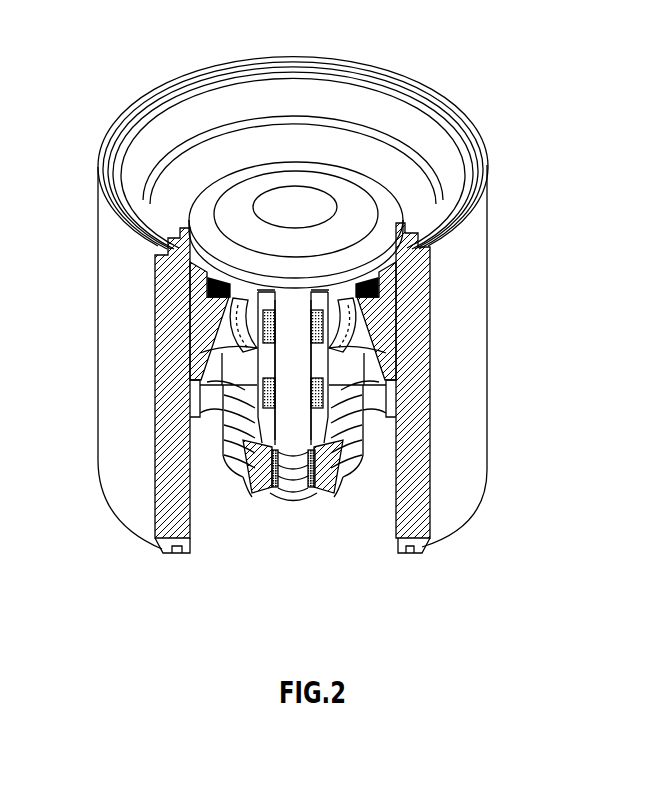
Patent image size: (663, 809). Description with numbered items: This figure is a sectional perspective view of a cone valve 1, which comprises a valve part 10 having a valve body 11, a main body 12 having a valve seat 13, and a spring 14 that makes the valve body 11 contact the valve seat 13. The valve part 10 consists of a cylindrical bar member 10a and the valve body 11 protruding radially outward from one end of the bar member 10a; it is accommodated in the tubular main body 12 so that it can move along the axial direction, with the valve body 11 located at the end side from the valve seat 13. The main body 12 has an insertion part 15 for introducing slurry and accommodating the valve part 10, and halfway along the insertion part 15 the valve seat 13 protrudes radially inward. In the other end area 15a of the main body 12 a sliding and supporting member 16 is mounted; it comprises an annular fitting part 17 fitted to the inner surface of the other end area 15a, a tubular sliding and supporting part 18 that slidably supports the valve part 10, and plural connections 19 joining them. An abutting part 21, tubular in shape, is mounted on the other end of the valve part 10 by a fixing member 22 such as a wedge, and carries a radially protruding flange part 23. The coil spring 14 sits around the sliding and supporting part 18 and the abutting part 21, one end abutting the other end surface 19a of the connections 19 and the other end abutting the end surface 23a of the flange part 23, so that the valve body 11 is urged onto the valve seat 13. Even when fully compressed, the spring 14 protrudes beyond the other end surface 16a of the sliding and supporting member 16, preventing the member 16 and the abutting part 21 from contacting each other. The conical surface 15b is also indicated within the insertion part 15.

The cone valve 1 is at (546, 30).
The valve part 10 is at (352, 163).
The bar member 10a is at (297, 362).
The valve body 11 is at (377, 207).
The main body 12 is at (126, 112).
The valve seat 13 is at (228, 310).
The spring 14 is at (350, 443).
The insertion part 15 is at (293, 302).
The other end area 15a is at (217, 498).
The dish portion of cap 15b is at (200, 163).
The sliding and supporting member 16 is at (397, 296).
The other end surface of the sliding and supporting member 16a is at (247, 447).
The fitting part 17 is at (397, 402).
The sliding and supporting part 18 is at (350, 326).
The connections 19 is at (368, 363).
The other end surface of the connections 19a is at (345, 392).
The abutting part 21 is at (336, 497).
The fixing member 22 is at (313, 498).
The flange part 23 is at (340, 490).
The end surface of the flange part 23a is at (335, 468).